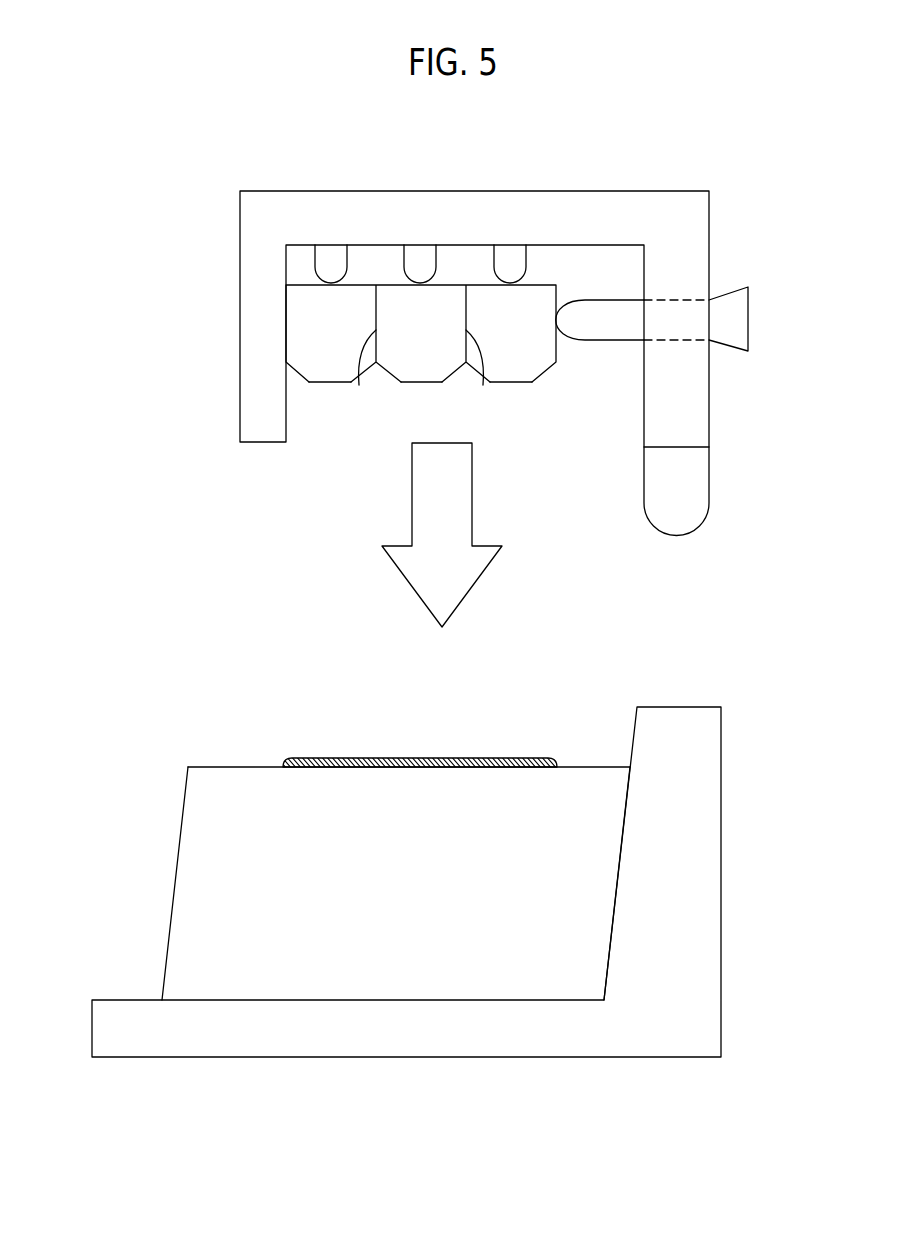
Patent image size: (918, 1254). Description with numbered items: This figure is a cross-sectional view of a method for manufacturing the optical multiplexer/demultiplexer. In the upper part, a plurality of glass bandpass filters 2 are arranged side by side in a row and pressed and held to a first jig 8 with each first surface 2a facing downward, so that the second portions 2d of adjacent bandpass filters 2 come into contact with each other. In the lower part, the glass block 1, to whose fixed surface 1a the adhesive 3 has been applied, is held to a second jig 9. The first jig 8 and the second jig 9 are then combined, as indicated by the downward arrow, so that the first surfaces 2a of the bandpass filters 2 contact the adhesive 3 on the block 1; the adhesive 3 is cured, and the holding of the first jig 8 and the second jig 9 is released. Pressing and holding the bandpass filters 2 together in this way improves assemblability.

The block 1 is at (188, 881).
The fixed surface 1a is at (228, 767).
The bandpass filter 2 is at (302, 300).
The first surface 2a is at (330, 383).
The second portion 2d is at (359, 385).
The adhesive 3 is at (312, 757).
The first jig 8 is at (642, 210).
The second jig 9 is at (708, 873).